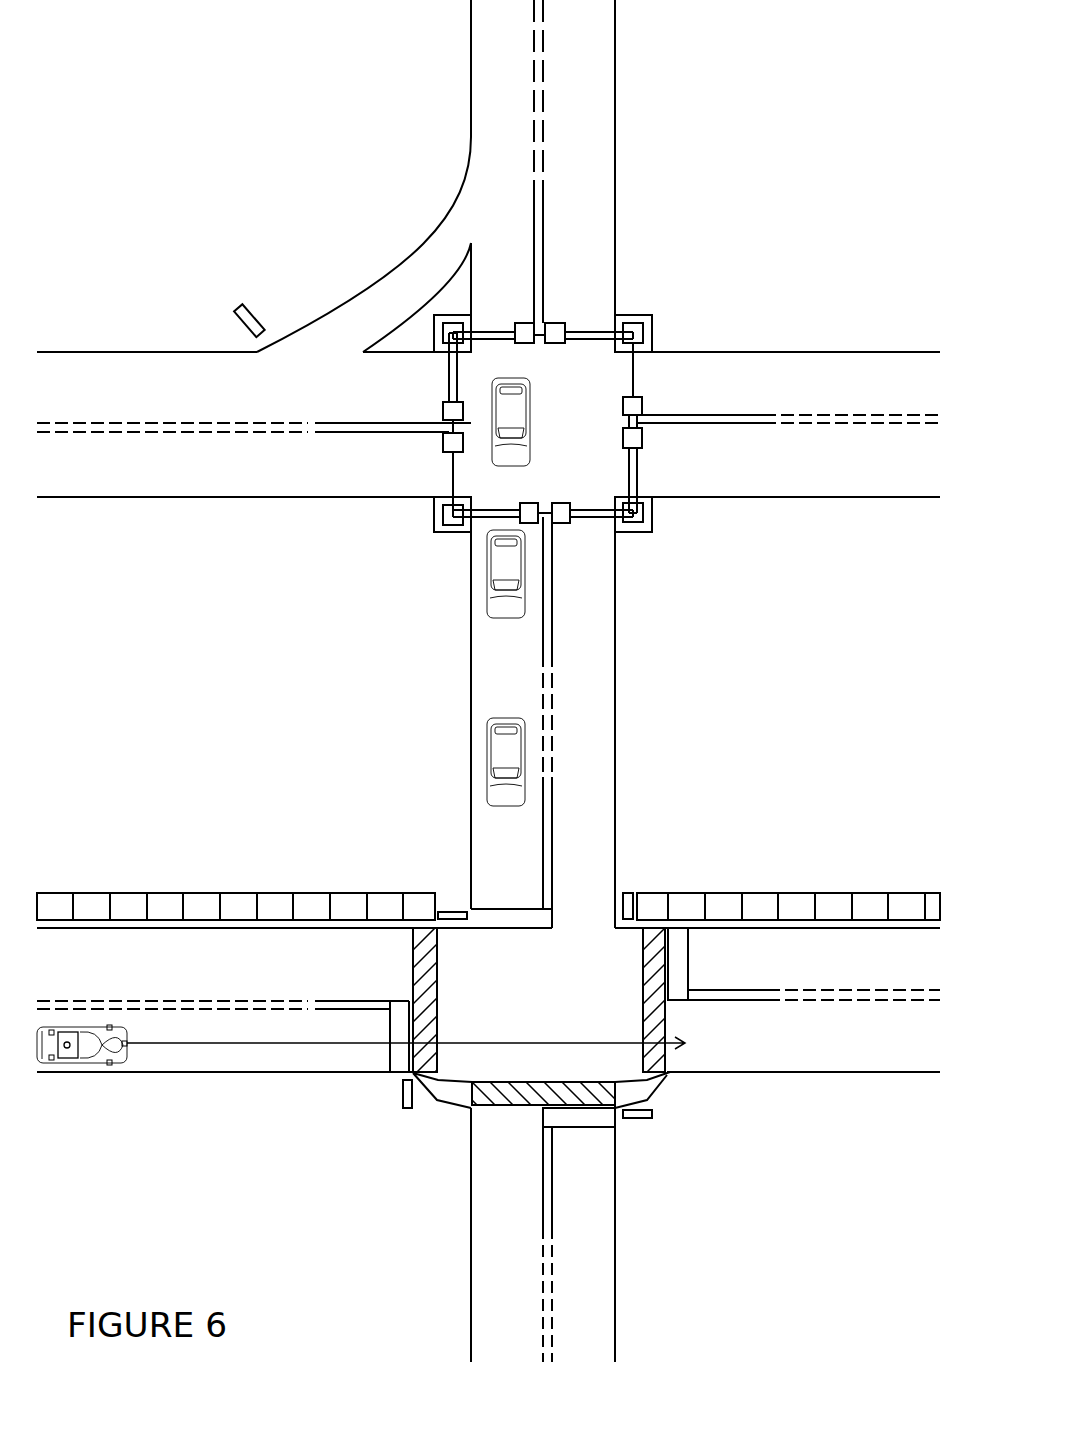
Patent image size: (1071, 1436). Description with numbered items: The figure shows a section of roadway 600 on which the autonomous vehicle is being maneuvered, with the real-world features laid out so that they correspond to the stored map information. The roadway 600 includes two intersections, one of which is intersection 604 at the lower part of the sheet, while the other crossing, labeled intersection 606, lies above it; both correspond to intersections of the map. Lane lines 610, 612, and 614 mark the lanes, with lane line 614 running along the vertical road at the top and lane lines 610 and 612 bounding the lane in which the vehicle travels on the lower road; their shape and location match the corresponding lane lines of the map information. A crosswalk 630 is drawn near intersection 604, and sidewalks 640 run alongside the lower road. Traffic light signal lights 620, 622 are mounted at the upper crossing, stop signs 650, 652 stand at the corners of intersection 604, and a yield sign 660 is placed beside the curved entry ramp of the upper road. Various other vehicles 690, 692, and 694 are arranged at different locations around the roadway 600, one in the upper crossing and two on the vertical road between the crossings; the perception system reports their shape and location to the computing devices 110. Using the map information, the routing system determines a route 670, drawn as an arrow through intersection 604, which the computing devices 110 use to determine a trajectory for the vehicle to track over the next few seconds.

The computing devices 110 is at (78, 1030).
The roadway 600 is at (165, 1281).
The intersection 604 is at (539, 1015).
The intersection 606 is at (543, 423).
The lane line 610 is at (278, 1010).
The lane line 612 is at (197, 1072).
The lane line 614 is at (543, 100).
The traffic light signal light 620 is at (443, 442).
The traffic light signal light 622 is at (443, 403).
The crosswalk 630 is at (427, 1075).
The sidewalks 640 is at (717, 892).
The stop sign 650 is at (450, 912).
The stop sign 652 is at (652, 1115).
The yield sign 660 is at (232, 313).
The route 670 is at (315, 1042).
The vehicle 690 is at (487, 808).
The vehicle 692 is at (487, 617).
The vehicle 694 is at (492, 397).